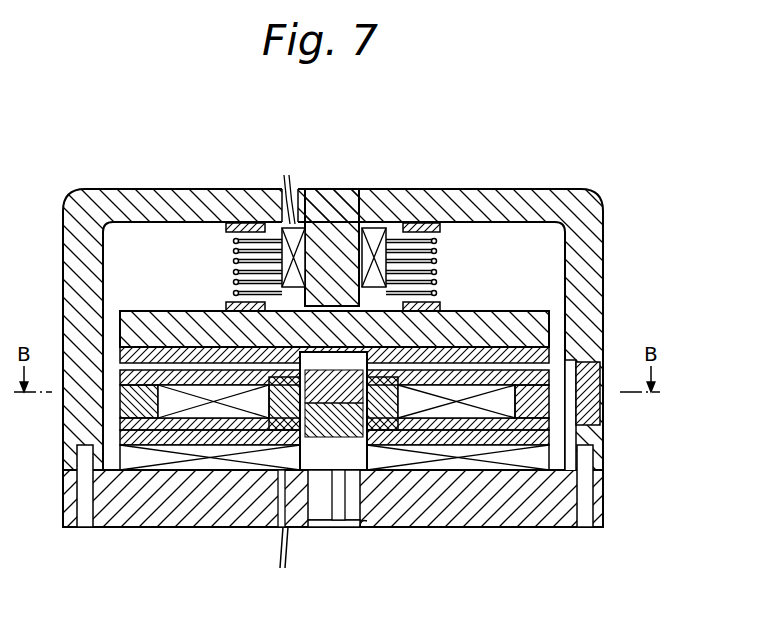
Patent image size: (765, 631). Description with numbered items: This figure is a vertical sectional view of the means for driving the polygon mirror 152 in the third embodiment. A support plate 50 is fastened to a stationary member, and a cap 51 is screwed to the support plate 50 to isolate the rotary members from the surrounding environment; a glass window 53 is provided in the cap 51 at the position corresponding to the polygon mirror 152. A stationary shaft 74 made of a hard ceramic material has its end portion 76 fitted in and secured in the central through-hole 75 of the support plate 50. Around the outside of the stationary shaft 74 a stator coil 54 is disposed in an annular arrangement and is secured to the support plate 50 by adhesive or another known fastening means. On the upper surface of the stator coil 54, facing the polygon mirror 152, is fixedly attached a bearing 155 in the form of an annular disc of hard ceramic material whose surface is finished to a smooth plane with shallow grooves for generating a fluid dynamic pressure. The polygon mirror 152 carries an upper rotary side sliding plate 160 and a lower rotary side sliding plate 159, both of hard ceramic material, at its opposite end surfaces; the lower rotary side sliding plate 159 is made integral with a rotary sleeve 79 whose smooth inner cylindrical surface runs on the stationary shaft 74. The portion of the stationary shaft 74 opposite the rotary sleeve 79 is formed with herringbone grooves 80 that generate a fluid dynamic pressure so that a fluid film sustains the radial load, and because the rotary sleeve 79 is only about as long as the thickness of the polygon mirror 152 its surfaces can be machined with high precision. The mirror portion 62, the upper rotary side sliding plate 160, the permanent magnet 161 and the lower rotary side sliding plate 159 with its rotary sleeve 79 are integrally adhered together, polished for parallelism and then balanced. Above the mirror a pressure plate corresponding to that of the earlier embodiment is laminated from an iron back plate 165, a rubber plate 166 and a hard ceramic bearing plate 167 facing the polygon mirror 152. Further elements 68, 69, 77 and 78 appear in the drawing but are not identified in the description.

The support plate 50 is at (603, 498).
The cap 51 is at (593, 193).
The glass window 53 is at (605, 362).
The stator coil 54 is at (537, 463).
The mirror portion 62 is at (122, 417).
The coil spring 68 is at (437, 245).
The spring bobbin 69 is at (373, 238).
The stationary shaft 74 is at (352, 465).
The central through-hole 75 is at (363, 522).
The end portion 76 is at (325, 510).
The lead wires 77 is at (303, 530).
The left core block 78 is at (290, 408).
The rotary sleeve 79 is at (388, 410).
The grooves 80 is at (352, 356).
The polygon mirror 152 is at (558, 405).
The bearing 155 is at (232, 420).
The lower rotary side sliding plate 159 is at (468, 425).
The upper rotary side sliding plate 160 is at (122, 378).
The permanent magnet 161 is at (193, 417).
The back plate 165 is at (470, 318).
The rubber plate 166 is at (497, 347).
The bearing plate 167 is at (143, 347).